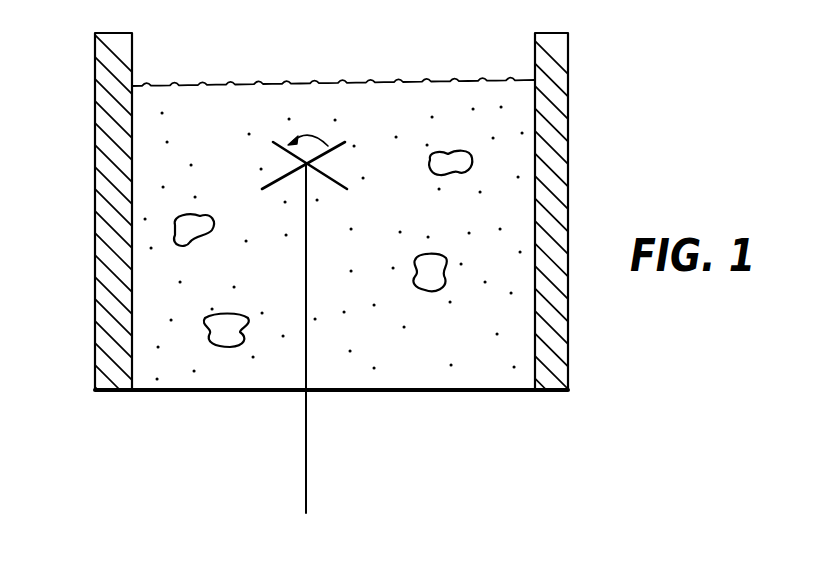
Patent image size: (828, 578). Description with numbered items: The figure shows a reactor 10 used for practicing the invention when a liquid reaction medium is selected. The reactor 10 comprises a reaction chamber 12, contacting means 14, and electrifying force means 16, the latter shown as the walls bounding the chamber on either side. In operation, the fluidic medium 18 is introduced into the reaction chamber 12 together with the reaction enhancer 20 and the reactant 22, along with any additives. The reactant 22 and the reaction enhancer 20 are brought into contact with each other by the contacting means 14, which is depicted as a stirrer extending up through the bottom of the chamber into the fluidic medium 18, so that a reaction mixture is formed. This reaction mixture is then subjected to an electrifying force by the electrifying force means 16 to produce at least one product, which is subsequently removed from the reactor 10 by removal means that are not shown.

The reactor 10 is at (606, 181).
The reaction chamber 12 is at (208, 393).
The contacting means 14 is at (308, 347).
The electrifying force means 16 is at (96, 375).
The fluidic medium 18 is at (207, 84).
The reaction enhancer 20 is at (433, 152).
The reactant 22 is at (485, 98).